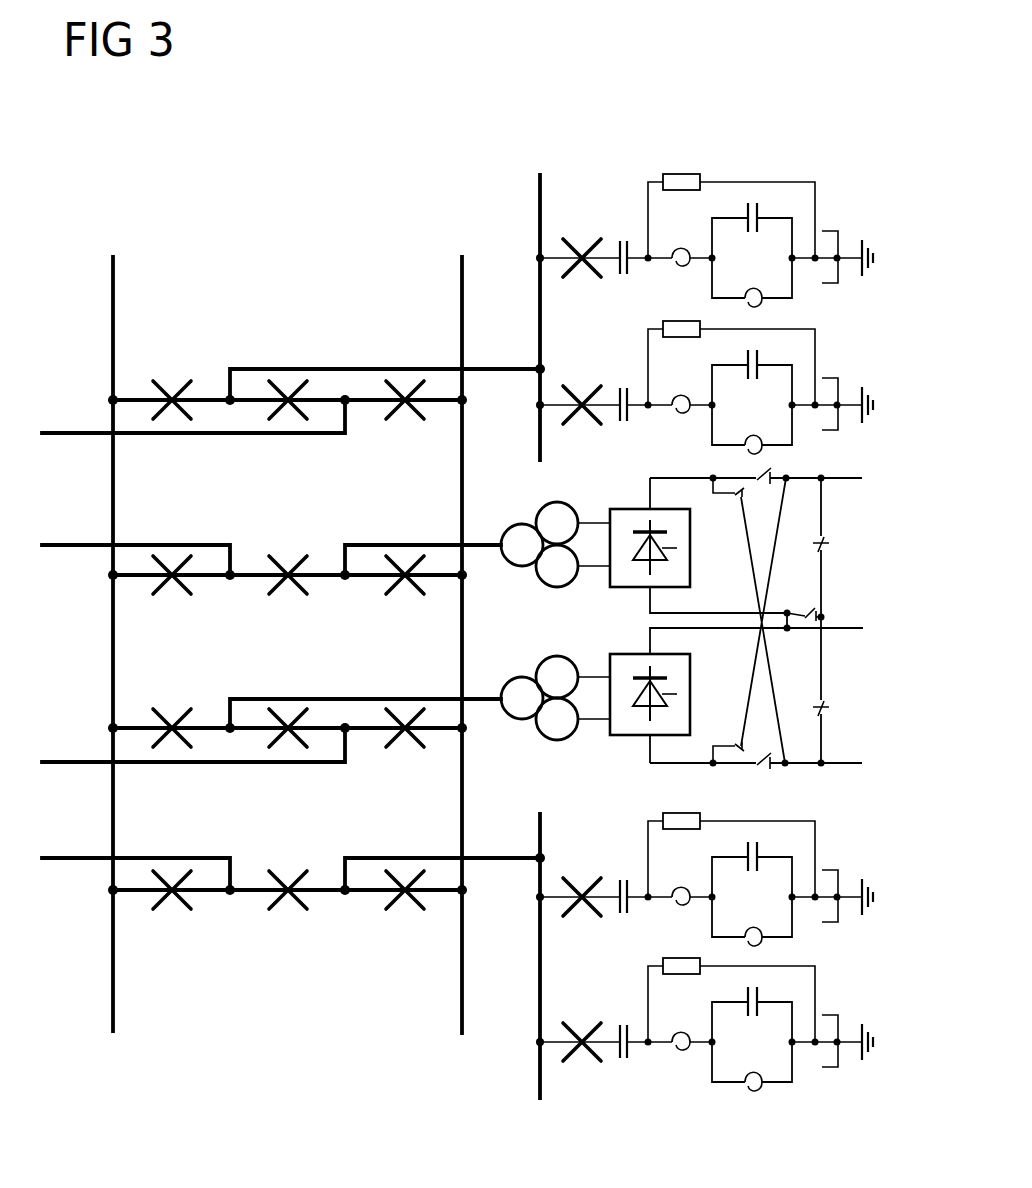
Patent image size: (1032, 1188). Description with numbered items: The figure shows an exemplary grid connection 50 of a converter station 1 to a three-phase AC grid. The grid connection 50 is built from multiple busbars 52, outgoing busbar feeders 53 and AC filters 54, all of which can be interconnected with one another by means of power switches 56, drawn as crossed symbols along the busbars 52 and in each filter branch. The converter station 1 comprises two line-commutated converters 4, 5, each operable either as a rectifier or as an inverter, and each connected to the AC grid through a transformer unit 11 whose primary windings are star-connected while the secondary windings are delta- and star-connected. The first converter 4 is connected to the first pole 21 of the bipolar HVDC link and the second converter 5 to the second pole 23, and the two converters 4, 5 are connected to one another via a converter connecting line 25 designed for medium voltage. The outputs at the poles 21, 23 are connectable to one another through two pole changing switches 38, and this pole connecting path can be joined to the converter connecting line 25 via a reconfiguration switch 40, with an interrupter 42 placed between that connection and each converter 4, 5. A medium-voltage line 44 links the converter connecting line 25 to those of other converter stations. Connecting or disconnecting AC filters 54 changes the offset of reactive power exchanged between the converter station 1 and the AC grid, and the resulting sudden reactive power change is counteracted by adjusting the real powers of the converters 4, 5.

The converter station 1 is at (636, 743).
The first converter 4 is at (624, 508).
The second converter 5 is at (624, 653).
The transformer unit 11 is at (526, 573).
The first pole 21 is at (838, 478).
The second pole 23 is at (845, 763).
The converter connecting line 25 is at (789, 632).
The pole changing switch 38 is at (729, 504).
The reconfiguration switch 40 is at (805, 612).
The interrupter 42 is at (823, 540).
The medium-voltage line 44 is at (838, 628).
The grid connection 50 is at (324, 282).
The busbar 52 is at (113, 812).
The outgoing busbar feeder 53 is at (325, 697).
The AC filter 54 is at (853, 1078).
The power switch 56 is at (290, 897).